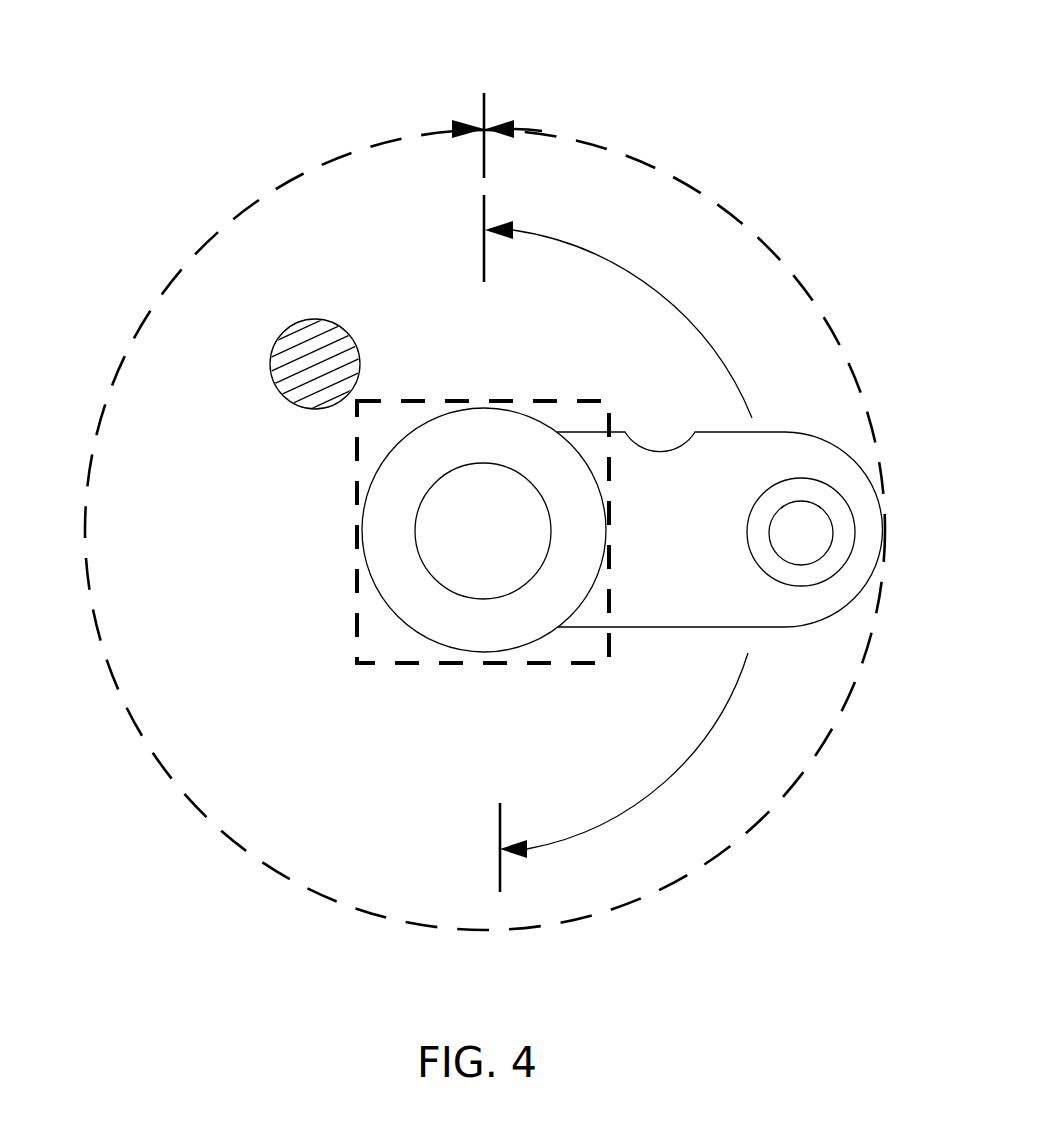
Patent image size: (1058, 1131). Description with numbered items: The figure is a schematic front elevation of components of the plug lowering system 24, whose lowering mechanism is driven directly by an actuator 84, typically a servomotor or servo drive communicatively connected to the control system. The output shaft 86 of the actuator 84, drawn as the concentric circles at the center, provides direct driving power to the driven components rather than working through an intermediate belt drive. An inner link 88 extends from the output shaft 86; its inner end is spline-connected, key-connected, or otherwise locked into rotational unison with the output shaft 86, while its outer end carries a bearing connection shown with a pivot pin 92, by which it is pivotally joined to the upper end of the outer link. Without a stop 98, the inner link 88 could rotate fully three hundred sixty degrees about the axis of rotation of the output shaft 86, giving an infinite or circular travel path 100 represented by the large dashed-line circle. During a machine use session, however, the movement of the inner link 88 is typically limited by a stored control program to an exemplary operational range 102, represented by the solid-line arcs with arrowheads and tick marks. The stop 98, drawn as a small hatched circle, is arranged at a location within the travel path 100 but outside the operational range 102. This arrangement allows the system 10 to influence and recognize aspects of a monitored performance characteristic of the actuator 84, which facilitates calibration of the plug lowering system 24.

The system 10 is at (115, 102).
The plug lowering system 24 is at (783, 890).
The actuator 84 is at (405, 647).
The output shaft 86 is at (501, 538).
The inner link 88 is at (690, 543).
The pivot pin 92 is at (800, 535).
The stop 98 is at (300, 366).
The travel path 100 is at (396, 135).
The operational range 102 is at (672, 303).